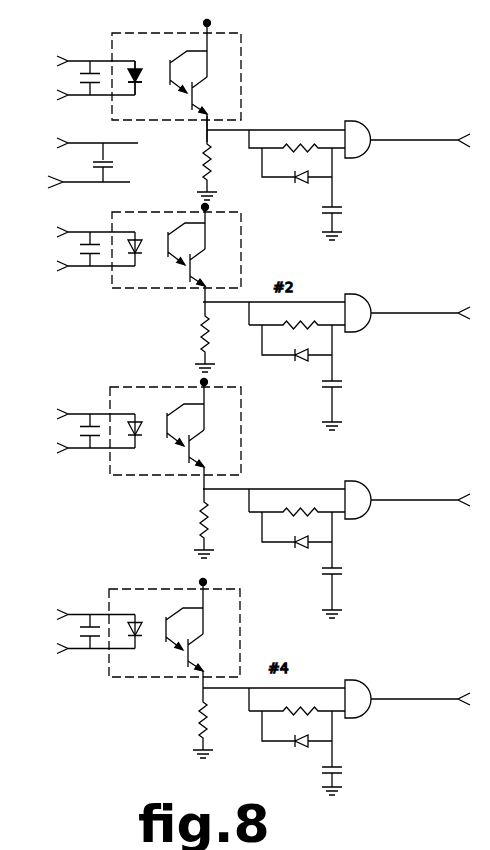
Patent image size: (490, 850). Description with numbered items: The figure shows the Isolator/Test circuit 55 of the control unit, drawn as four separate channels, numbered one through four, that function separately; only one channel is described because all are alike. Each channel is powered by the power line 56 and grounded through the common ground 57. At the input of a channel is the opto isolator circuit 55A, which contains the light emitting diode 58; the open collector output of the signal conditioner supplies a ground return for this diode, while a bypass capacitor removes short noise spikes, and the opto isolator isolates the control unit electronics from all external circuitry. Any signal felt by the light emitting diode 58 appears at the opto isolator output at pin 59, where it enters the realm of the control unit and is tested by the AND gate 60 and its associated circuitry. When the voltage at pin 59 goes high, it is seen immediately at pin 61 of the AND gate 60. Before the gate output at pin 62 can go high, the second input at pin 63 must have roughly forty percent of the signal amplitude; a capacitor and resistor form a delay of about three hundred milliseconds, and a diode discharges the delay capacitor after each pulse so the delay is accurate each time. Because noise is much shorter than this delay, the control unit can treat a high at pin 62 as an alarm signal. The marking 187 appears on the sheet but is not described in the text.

The opto isolator circuit 55A is at (250, 130).
The Isolator/Test circuit 55 is at (398, 538).
The power line 56 is at (138, 143).
The common ground 57 is at (130, 182).
The light emitting diode 58 is at (136, 68).
The pin 59 is at (203, 124).
The AND gate 60 is at (357, 133).
The pin 61 is at (344, 128).
The pin 62 is at (372, 138).
The pin 63 is at (341, 157).
The circuit 187 is at (489, 820).